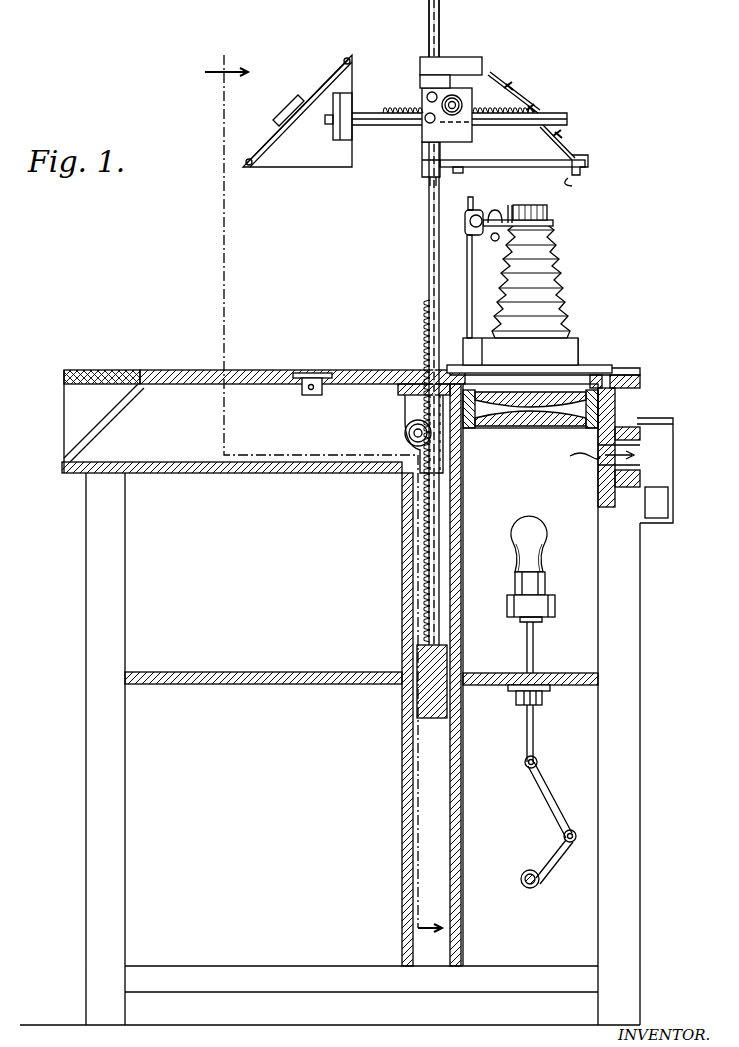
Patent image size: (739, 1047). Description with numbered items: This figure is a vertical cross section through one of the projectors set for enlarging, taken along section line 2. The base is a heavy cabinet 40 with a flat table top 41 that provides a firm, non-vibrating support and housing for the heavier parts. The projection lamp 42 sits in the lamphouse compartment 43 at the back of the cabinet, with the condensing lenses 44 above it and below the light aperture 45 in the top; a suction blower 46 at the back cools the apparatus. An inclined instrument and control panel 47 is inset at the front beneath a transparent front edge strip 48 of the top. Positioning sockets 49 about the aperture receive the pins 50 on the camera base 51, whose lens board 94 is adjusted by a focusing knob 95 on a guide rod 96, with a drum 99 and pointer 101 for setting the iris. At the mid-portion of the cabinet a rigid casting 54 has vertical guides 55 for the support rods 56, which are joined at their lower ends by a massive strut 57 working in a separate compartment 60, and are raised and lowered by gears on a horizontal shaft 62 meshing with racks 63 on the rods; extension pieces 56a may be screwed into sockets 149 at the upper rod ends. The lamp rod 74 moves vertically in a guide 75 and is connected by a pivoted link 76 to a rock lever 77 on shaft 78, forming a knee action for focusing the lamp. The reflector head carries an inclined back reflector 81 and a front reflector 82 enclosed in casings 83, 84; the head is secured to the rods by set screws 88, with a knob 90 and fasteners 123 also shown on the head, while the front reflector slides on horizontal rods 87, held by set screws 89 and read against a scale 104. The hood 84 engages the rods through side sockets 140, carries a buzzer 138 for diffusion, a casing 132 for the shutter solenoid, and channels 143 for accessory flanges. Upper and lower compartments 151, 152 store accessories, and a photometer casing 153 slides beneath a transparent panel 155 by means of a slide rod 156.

The section line 2- 2 is at (322, 488).
The cabinet 40 is at (86, 591).
The table top 41 is at (178, 372).
The projection lamp 42 is at (547, 540).
The lamphouse compartment 43 is at (530, 697).
The condensing lenses 44 is at (545, 372).
The light aperture 45 is at (595, 372).
The suction blower 46 is at (662, 420).
The instrument and control panel 47 is at (102, 412).
The transparent front edge strip 48 is at (88, 372).
The positioning sockets 49 is at (640, 372).
The pins 50 is at (628, 375).
The camera base 51 is at (590, 362).
The casting or body 54 is at (404, 407).
The vertical guides 55 is at (462, 458).
The support rods 56 is at (429, 250).
The extension pieces 56a is at (440, 24).
The strut or base connection 57 is at (418, 702).
The compartment 60 is at (440, 808).
The horizontal shaft 62 is at (405, 434).
The racks 63 is at (424, 350).
The rod 74 is at (534, 645).
The guide 75 is at (537, 705).
The pivoted link 76 is at (546, 800).
The rock lever 77 is at (558, 856).
The shaft 78 is at (529, 890).
The back reflector 81 is at (505, 78).
The front reflector 82 is at (312, 74).
The casing 83 is at (512, 149).
The casing 84 is at (297, 111).
The horizontally sliding rods 87 is at (567, 118).
The set screws 88 is at (428, 96).
The set screws 89 is at (422, 170).
The knob 90 is at (458, 100).
The lens board or plate 94 is at (553, 226).
The focusing knob 95 is at (468, 222).
The guide rod 96 is at (472, 285).
The drum 99 is at (548, 210).
The pointer 101 is at (512, 205).
The scale 104 is at (395, 120).
The screws 123 is at (564, 135).
The casing 132 is at (468, 66).
The buzzer 138 is at (277, 114).
The side sockets 140 is at (345, 116).
The channels 143 is at (590, 178).
The sockets 149 is at (430, 184).
The upper compartment 151 is at (232, 421).
The lower compartment 152 is at (263, 615).
The casing 153 is at (302, 392).
The transparent panel 155 is at (312, 372).
The slide rod 156 is at (311, 394).